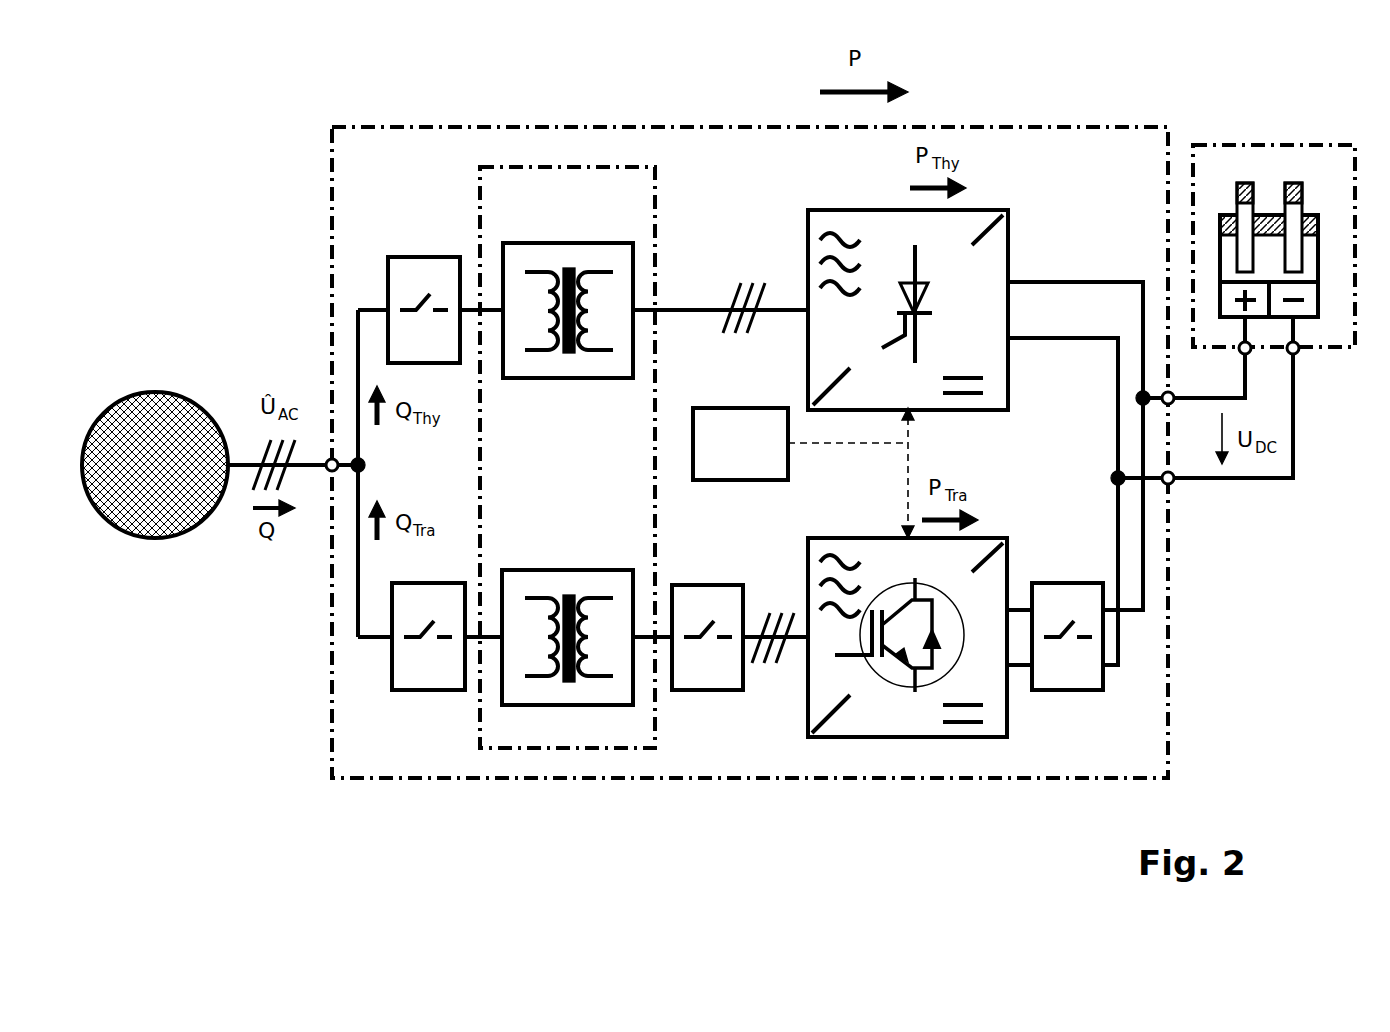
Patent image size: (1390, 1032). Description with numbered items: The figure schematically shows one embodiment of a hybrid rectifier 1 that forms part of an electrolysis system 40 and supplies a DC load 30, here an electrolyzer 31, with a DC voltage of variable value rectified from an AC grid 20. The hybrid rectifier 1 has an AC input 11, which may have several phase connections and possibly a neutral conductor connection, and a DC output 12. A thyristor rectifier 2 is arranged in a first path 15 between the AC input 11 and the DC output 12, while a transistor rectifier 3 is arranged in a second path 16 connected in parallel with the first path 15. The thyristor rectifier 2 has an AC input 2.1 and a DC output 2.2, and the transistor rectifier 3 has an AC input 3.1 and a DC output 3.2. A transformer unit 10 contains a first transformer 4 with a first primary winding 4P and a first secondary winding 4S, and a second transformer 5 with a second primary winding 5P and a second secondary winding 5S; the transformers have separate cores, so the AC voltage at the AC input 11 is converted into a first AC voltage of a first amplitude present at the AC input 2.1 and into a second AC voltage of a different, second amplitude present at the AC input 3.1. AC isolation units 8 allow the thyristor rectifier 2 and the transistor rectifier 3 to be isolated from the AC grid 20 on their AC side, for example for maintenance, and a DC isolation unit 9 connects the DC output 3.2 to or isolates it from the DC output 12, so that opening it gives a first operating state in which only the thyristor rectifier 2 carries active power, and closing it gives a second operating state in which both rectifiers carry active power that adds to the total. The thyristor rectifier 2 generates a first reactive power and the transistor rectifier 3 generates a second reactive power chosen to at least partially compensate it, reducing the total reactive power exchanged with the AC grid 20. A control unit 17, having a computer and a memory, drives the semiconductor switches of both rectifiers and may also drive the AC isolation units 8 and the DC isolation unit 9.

The hybrid rectifier 1 is at (748, 125).
The thyristor rectifier 2 is at (898, 210).
The AC input of the thyristor rectifier 2.1 is at (793, 282).
The DC output of the thyristor rectifier 2.2 is at (1030, 310).
The transistor rectifier 3 is at (900, 537).
The AC input of the transistor rectifier 3.1 is at (797, 592).
The DC output of the transistor rectifier 3.2 is at (1021, 575).
The first transformer 4 is at (568, 324).
The first primary winding 4P is at (532, 368).
The first secondary winding 4S is at (607, 368).
The second transformer 5 is at (567, 599).
The second primary winding 5P is at (534, 590).
The second secondary winding 5S is at (603, 590).
The AC isolation unit 8 is at (423, 256).
The DC isolation unit 9 is at (1068, 583).
The transformer unit 10 is at (567, 750).
The AC input 11 is at (312, 490).
The DC output 12 is at (1188, 468).
The first path 15 is at (705, 196).
The second path 16 is at (748, 758).
The control unit 17 is at (803, 473).
The AC grid 20 is at (157, 392).
The DC load 30 is at (1255, 208).
The electrolyzer 31 is at (1220, 215).
The electrolysis system 40 is at (270, 193).